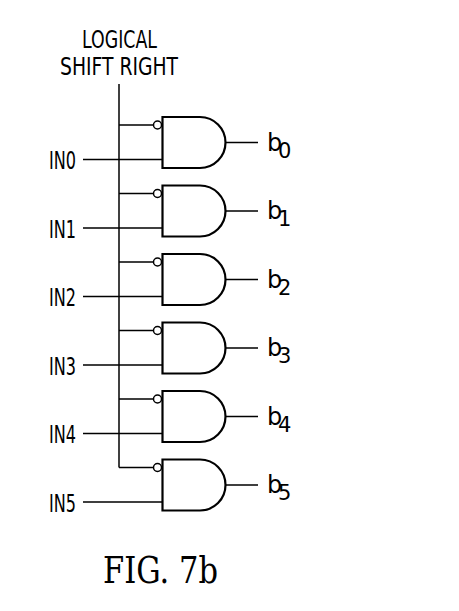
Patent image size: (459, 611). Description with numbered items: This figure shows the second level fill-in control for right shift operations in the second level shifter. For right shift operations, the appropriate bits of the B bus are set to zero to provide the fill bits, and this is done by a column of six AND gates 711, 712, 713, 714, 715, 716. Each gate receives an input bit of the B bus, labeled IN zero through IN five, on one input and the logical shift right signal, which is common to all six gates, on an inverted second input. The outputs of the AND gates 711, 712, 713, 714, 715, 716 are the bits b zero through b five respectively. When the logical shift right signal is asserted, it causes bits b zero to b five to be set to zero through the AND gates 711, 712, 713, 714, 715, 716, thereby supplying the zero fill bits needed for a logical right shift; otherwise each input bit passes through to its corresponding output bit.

The AND gate 711 is at (219, 125).
The AND gate 712 is at (219, 194).
The AND gate 713 is at (219, 262).
The AND gate 714 is at (219, 330).
The AND gate 715 is at (219, 399).
The AND gate 716 is at (219, 468).